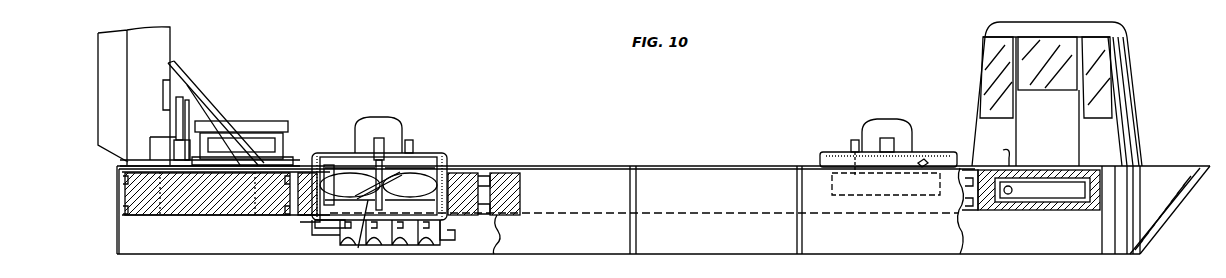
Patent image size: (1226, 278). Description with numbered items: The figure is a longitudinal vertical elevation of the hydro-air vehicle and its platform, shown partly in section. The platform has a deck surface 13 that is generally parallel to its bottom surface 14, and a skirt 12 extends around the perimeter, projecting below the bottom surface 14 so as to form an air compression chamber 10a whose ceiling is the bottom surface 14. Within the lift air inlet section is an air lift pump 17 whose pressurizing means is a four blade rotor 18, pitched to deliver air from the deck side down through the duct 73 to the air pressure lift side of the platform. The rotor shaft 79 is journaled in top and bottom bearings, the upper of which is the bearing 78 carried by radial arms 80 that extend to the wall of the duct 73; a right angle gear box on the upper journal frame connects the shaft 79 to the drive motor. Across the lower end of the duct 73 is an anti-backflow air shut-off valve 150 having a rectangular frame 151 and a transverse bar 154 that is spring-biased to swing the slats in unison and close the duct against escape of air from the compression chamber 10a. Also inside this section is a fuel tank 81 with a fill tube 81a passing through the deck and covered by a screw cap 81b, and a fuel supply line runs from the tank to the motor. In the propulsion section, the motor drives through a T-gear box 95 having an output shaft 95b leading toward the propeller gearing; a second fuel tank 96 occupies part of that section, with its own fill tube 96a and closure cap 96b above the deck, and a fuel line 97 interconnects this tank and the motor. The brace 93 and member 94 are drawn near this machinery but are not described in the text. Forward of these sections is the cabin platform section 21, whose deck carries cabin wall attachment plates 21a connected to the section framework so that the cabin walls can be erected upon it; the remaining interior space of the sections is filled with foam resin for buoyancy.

The air compression chamber 10a is at (1052, 241).
The skirt 12 is at (934, 243).
The deck surface 13 is at (480, 174).
The bottom surface 14 is at (208, 216).
The air lift pump 17 is at (446, 152).
The four blade rotor 18 is at (415, 187).
The cabin platform section 21 is at (1142, 152).
The cabin wall attachment plates 21a is at (1012, 166).
The duct 73 is at (436, 226).
The top bearing 78 is at (400, 160).
The pump shaft 79 is at (350, 185).
The radial arms 80 is at (330, 162).
The fuel tank 81 is at (832, 186).
The fill tube 81a is at (877, 173).
The screw cap 81b is at (924, 160).
The diagonal brace 93 is at (200, 92).
The platform 94 is at (276, 122).
The T-gear box 95 is at (165, 144).
The output shaft 95b is at (170, 105).
The fuel tank 96 is at (238, 217).
The fill tube 96a is at (160, 217).
The closure cap 96b is at (200, 145).
The fuel line 97 is at (228, 140).
The air shut-off valve 150 is at (334, 235).
The rectangular frame 151 is at (318, 222).
The transverse bar 154 is at (408, 246).